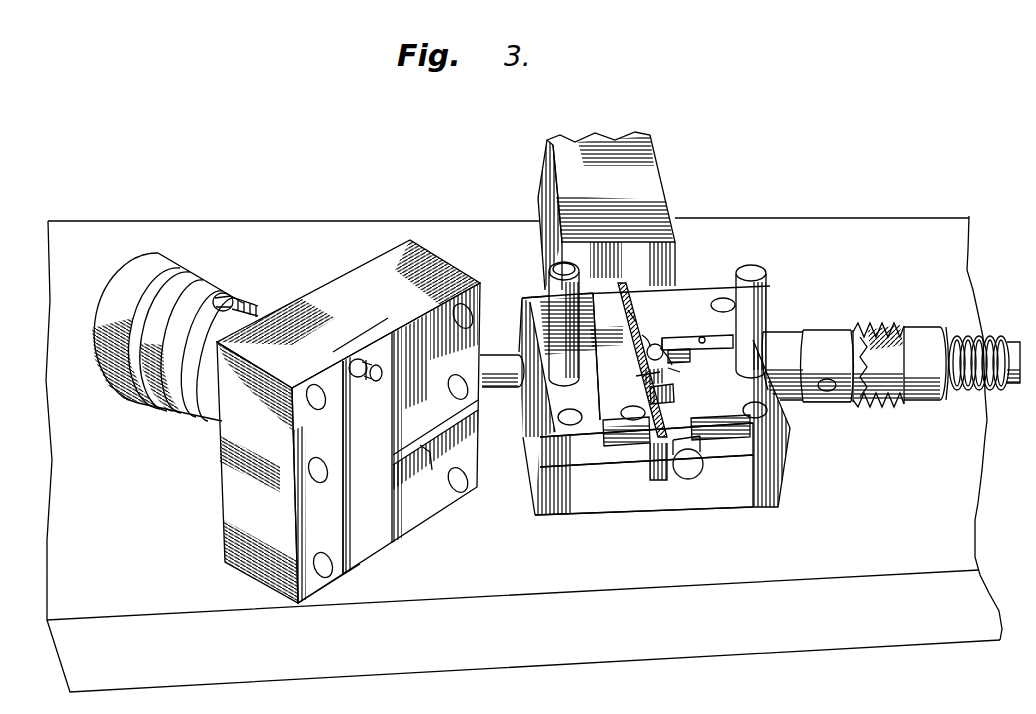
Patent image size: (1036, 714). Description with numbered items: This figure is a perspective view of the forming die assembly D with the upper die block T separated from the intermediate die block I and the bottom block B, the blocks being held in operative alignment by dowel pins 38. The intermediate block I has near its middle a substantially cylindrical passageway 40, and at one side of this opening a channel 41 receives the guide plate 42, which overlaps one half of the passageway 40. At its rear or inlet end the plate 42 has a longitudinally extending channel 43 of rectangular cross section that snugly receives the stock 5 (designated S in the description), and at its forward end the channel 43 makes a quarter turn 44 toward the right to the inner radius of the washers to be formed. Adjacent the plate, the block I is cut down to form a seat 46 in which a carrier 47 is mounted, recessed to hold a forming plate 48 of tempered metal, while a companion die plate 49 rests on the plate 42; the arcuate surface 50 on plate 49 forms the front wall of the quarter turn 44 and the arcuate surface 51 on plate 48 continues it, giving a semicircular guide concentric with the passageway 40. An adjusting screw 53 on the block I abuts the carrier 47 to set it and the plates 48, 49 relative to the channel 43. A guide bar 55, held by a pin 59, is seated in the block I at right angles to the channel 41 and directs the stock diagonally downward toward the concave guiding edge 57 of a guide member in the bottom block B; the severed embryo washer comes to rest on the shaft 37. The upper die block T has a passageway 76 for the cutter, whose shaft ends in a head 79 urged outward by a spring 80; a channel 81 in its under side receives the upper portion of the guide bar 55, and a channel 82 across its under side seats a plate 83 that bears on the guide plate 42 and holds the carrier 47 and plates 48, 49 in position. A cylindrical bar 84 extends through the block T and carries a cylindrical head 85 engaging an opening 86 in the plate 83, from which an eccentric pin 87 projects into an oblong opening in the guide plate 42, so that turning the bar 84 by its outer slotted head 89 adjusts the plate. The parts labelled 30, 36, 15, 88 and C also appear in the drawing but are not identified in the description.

The die block 30 is at (641, 178).
The gear 36 is at (873, 323).
The shaft 37 is at (513, 397).
The dowel pins 38 is at (560, 283).
The cylindrical passageway 40 is at (660, 348).
The channel 41 is at (611, 448).
The guide plate 42 is at (603, 395).
The longitudinally extending channel 43 is at (632, 313).
The quarter turn 44 is at (650, 345).
The seat 46 is at (723, 405).
The carrier 47 is at (681, 410).
The forming plate 48 is at (688, 358).
The companion die plate 49 is at (640, 377).
The arcuate surface 50 is at (633, 360).
The arcuate surface 51 is at (668, 368).
The adjusting screw 53 is at (690, 475).
The guide bar 55 is at (711, 340).
The concave guiding edge 57 is at (652, 345).
The pin 59 is at (703, 336).
The screw 15 is at (655, 482).
The stylus 5 is at (624, 290).
The passageway 76 is at (408, 450).
The head 79 is at (105, 367).
The spring 80 is at (180, 403).
The channel 81 is at (428, 445).
The channel 82 is at (350, 548).
The plate 83 is at (365, 505).
The cylindrical bar 84 is at (262, 306).
The cylindrical head 85 is at (360, 358).
The opening 86 is at (362, 382).
The eccentric pin 87 is at (379, 365).
The hole 88 is at (620, 418).
The slotted head 89 is at (226, 295).
The bottom block B is at (778, 500).
The coupling C is at (155, 350).
The die assembly D is at (670, 407).
The intermediate die block I is at (790, 441).
The upper die block T is at (332, 421).